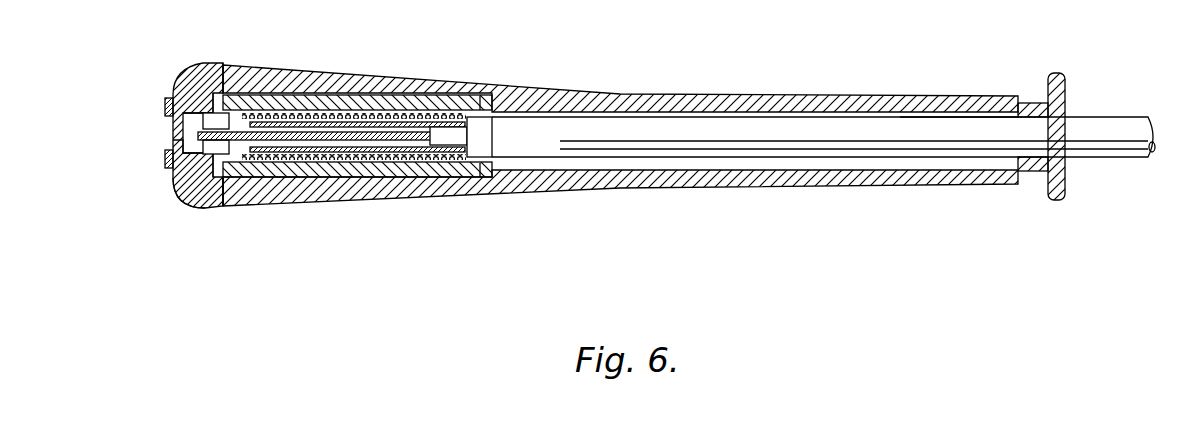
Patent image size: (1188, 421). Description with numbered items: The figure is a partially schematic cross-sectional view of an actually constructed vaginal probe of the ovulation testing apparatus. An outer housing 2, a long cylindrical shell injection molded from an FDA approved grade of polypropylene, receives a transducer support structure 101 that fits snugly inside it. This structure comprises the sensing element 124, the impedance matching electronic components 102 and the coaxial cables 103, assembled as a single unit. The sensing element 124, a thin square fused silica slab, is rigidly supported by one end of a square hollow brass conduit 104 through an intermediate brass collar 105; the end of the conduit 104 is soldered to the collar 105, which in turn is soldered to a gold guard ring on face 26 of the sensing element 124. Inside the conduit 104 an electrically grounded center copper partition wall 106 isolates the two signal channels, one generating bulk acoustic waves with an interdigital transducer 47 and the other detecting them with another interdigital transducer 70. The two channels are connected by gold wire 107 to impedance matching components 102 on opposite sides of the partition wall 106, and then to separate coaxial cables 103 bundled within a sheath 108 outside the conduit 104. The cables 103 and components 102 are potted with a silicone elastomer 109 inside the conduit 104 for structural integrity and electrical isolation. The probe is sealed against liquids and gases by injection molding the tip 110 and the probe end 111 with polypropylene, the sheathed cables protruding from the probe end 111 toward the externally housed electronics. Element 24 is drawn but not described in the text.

The outer housing 2 is at (672, 100).
The lower clamp member 24 is at (178, 166).
The face 26 is at (172, 138).
The interdigital transducer 47 is at (178, 122).
The interdigital transducer 70 is at (180, 148).
The transducer support structure 101 is at (715, 128).
The impedance matching electronic components 102 is at (224, 148).
The coaxial cables 103 is at (336, 158).
The hollow brass conduit 104 is at (478, 170).
The brass collar 105 is at (186, 100).
The center copper partition wall 106 is at (440, 140).
The gold wire 107 is at (217, 123).
The sheath 108 is at (948, 122).
The silicone elastomer 109 is at (364, 152).
The tip 110 is at (210, 200).
The probe end 111 is at (1062, 200).
The sensing element 124 is at (163, 211).